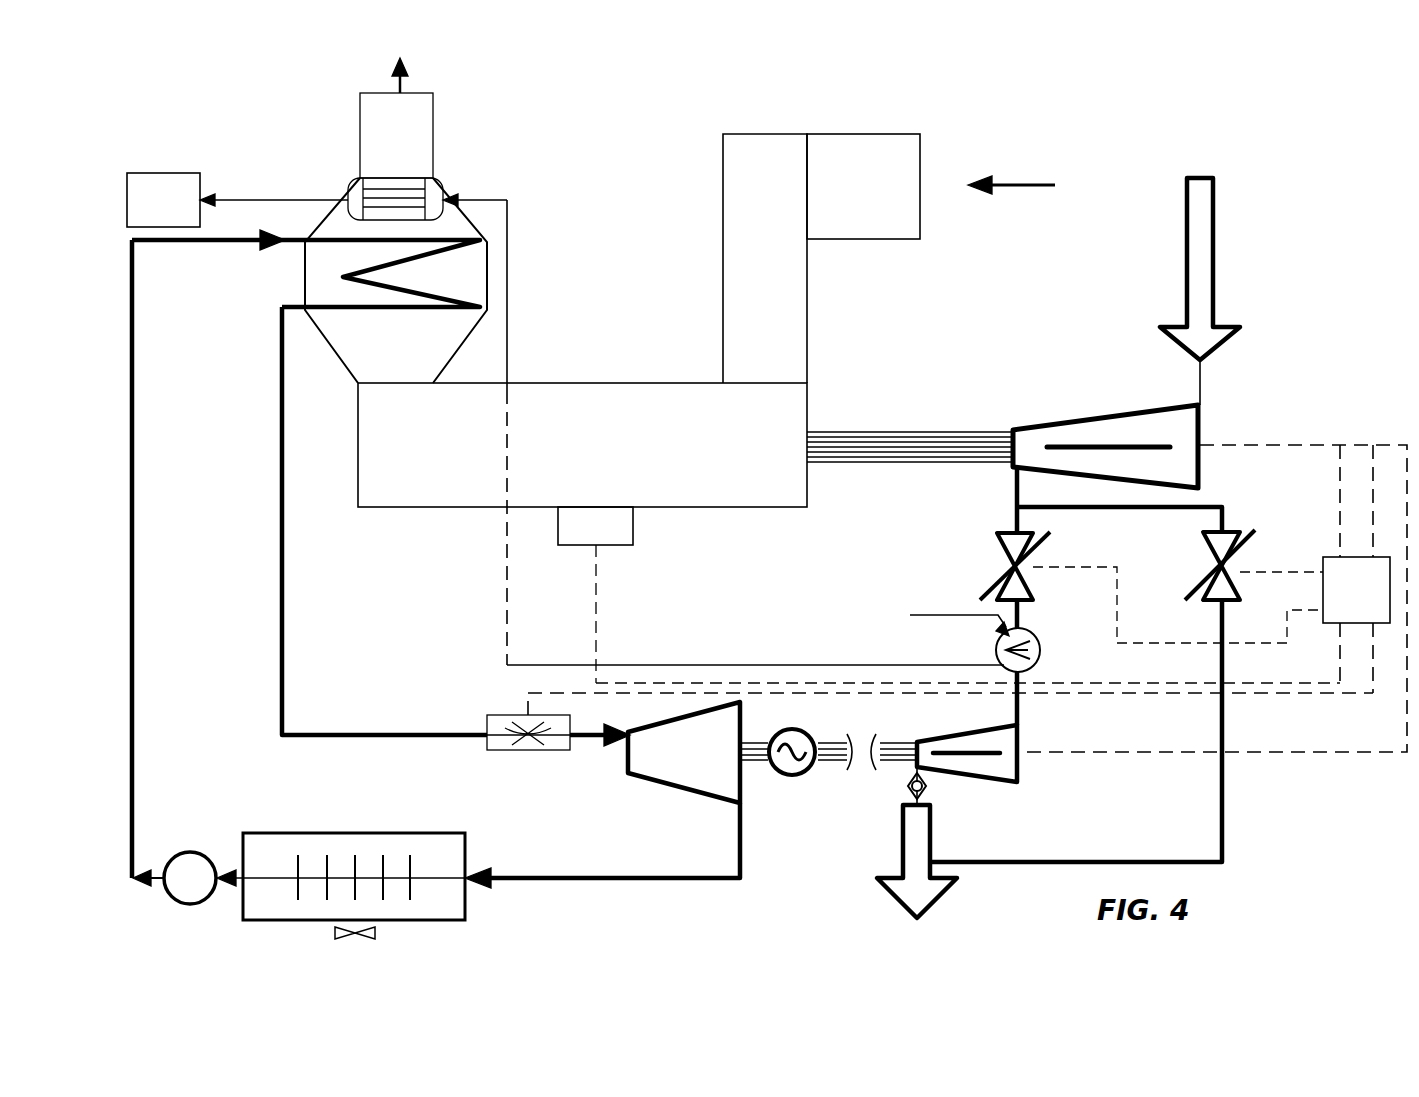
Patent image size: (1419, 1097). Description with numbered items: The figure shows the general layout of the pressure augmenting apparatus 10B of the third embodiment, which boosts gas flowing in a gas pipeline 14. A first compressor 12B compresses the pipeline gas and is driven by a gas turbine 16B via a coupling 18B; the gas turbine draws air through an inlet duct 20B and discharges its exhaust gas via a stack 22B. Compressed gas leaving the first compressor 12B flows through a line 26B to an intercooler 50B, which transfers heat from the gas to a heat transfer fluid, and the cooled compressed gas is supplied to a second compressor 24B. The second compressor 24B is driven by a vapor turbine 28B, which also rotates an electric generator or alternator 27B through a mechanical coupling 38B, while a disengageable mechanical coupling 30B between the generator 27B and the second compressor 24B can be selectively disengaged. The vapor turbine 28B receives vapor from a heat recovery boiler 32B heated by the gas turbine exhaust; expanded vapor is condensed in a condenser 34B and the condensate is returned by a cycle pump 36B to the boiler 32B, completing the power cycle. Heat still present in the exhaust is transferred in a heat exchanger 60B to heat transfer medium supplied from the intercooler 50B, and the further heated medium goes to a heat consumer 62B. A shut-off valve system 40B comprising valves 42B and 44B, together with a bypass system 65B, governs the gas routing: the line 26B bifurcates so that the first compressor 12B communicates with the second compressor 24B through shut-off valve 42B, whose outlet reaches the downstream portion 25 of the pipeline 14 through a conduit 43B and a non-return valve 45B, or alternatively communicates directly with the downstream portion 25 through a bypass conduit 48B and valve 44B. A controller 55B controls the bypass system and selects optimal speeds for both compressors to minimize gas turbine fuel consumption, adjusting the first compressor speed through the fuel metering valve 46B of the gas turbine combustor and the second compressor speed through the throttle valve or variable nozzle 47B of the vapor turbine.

The pressure augmenting apparatus 10B is at (1320, 142).
The first compressor 12B is at (1200, 420).
The gas pipeline 14 is at (1213, 274).
The gas turbine 16B is at (603, 383).
The coupling 18B is at (897, 432).
The inlet duct 20B is at (820, 134).
The stack 22B is at (433, 108).
The second compressor 24B is at (1019, 745).
The downstream portion of the pipeline 25 is at (930, 852).
The line 26B is at (1013, 477).
The electric generator or alternator 27B is at (810, 735).
The vapor turbine 28B is at (812, 720).
The disengageable mechanical coupling 30B is at (850, 768).
The heat recovery boiler 32B is at (320, 246).
The condenser 34B is at (323, 833).
The cycle pump 36B is at (172, 853).
The mechanical coupling 38B is at (752, 762).
The shut-off valve system 40B is at (1242, 494).
The shut-off valve 42B is at (1033, 533).
The conduit 43B is at (912, 771).
The valve 44B is at (1203, 533).
The non-return valve 45B is at (926, 791).
The fuel metering valve 46B is at (633, 520).
The throttle valve or variable nozzle 47B is at (506, 715).
The bypass conduit 48B is at (1222, 832).
The intercooler 50B is at (1033, 632).
The controller 55B is at (1335, 557).
The heat exchanger 60B is at (352, 178).
The heat consumer 62B is at (168, 173).
The bypass system 65B is at (1273, 430).